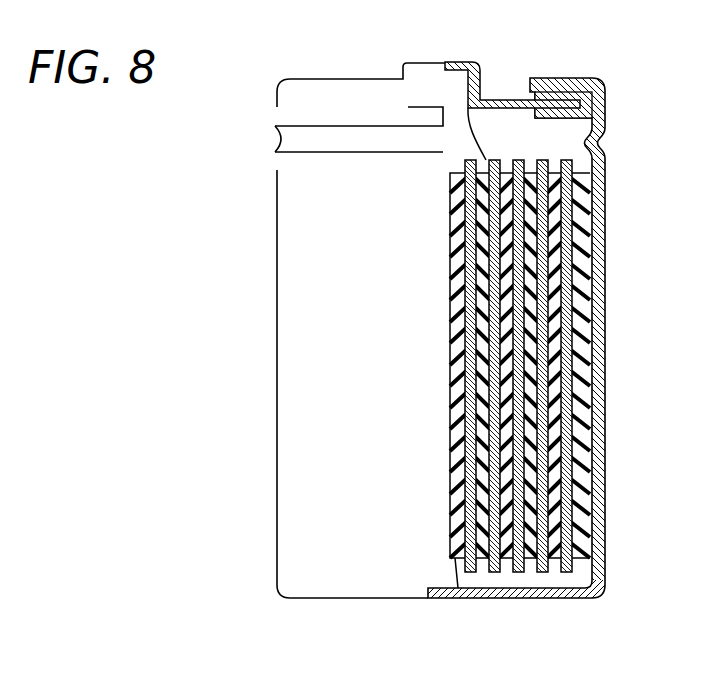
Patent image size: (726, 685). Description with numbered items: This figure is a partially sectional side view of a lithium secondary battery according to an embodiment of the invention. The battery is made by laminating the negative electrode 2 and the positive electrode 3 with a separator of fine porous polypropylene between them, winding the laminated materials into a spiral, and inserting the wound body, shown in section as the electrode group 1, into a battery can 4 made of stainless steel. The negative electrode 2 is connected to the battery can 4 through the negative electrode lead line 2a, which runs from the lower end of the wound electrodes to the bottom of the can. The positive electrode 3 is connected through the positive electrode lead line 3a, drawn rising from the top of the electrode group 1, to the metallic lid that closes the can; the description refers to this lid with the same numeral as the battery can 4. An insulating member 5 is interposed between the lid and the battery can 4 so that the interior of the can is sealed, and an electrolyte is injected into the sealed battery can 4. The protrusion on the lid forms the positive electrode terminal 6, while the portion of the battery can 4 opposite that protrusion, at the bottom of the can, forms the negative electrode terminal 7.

The electrode group 1 is at (575, 328).
The negative electrode 2 is at (460, 283).
The negative electrode lead line 2a is at (452, 577).
The positive electrode 3 is at (483, 357).
The positive electrode lead line 3a is at (474, 130).
The battery can 4 is at (505, 99).
The insulating member 5 is at (577, 116).
The positive electrode terminal 6 is at (458, 61).
The negative electrode terminal 7 is at (540, 598).